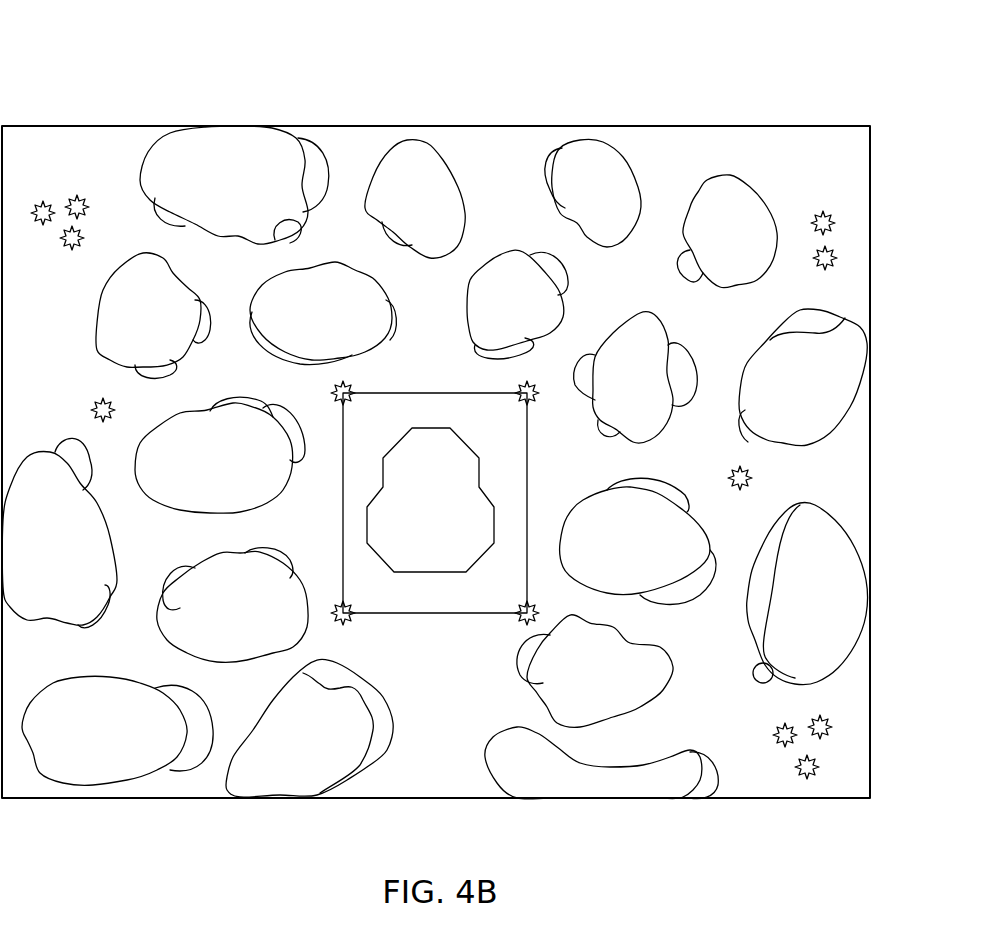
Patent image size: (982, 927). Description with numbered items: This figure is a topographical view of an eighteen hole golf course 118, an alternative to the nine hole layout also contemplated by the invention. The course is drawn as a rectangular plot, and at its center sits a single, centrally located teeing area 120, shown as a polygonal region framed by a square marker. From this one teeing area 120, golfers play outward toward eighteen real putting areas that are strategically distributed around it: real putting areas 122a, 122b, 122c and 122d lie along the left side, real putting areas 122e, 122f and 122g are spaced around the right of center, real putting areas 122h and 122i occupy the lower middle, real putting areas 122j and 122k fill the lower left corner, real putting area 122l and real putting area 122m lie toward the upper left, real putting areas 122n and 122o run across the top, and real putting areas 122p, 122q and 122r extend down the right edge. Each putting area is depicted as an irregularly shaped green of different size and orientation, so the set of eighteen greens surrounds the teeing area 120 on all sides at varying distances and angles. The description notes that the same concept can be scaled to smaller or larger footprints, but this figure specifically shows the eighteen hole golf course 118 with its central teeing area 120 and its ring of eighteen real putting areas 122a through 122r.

The 18 hole golf course 118 is at (110, 74).
The teeing area 120 is at (420, 517).
The real putting area 122a is at (293, 743).
The real putting area 122b is at (223, 626).
The real putting area 122c is at (202, 470).
The real putting area 122d is at (292, 326).
The real putting area 122e is at (484, 322).
The real putting area 122f is at (605, 410).
The real putting area 122g is at (600, 565).
The real putting area 122h is at (576, 690).
The real putting area 122i is at (527, 791).
The real putting area 122j is at (72, 750).
The real putting area 122k is at (28, 566).
The real putting area 122l is at (127, 339).
The real putting area 122m is at (210, 187).
The real putting area 122n is at (388, 206).
The real putting area 122o is at (574, 200).
The real putting area 122p is at (701, 246).
The real putting area 122q is at (775, 399).
The real putting area 122r is at (796, 606).